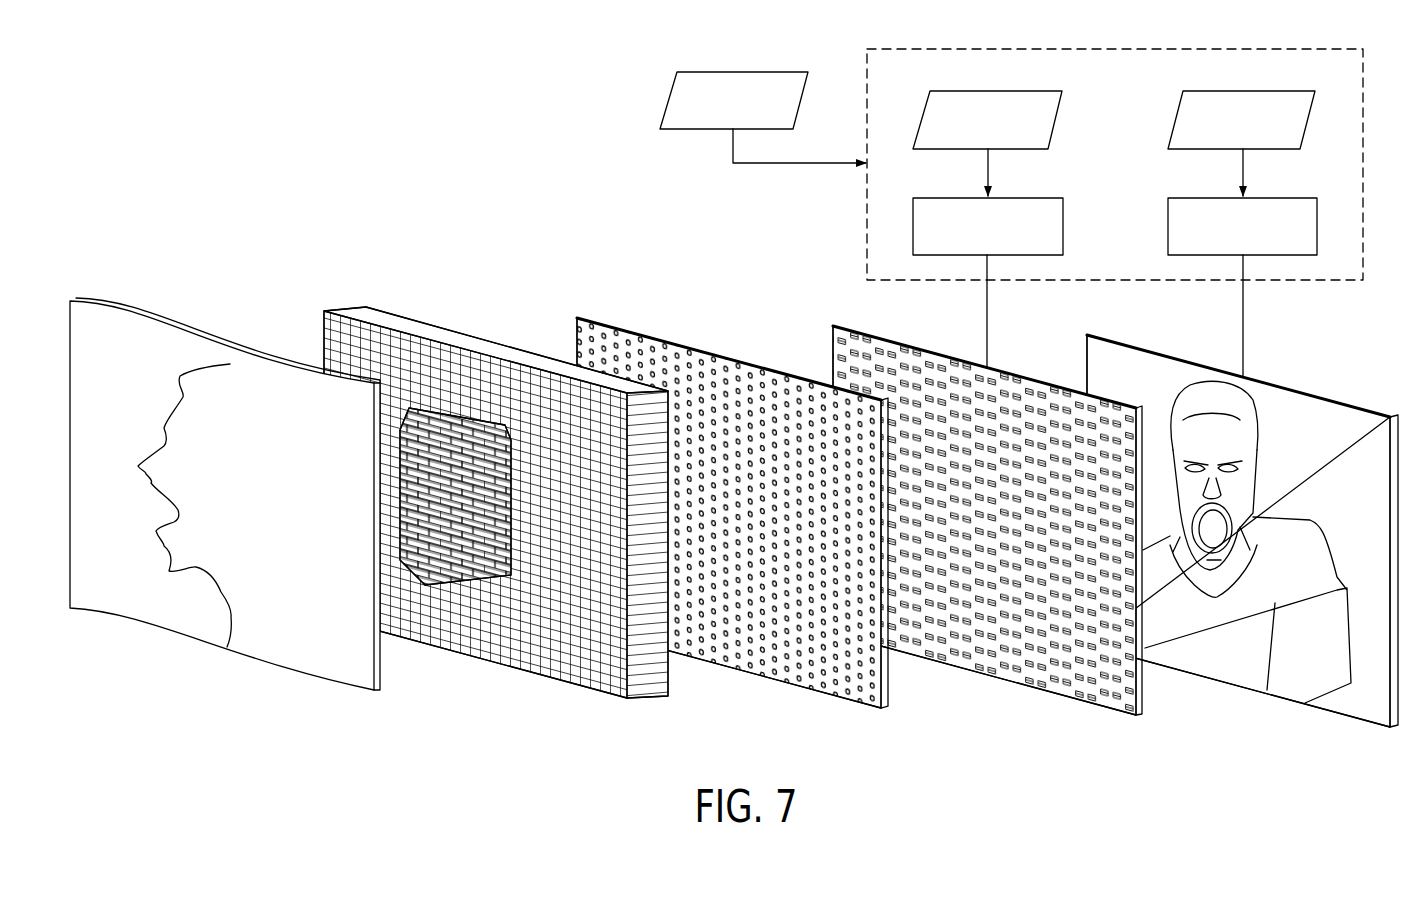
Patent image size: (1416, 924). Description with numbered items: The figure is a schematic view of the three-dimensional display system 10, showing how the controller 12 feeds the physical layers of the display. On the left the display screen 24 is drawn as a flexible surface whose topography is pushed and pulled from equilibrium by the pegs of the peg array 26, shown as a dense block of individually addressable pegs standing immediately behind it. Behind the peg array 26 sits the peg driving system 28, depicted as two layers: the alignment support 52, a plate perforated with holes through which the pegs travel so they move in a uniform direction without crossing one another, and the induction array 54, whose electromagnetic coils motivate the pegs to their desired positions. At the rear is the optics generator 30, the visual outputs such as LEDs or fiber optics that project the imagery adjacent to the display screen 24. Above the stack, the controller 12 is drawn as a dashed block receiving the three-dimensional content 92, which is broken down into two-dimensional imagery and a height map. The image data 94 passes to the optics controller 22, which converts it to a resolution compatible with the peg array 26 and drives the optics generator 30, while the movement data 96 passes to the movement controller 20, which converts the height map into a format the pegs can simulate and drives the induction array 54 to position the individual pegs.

The 3D display system 10 is at (279, 169).
The controller 12 is at (1240, 49).
The movement controller 20 is at (1025, 197).
The optics controller 22 is at (1280, 197).
The display screen 24 is at (156, 313).
The peg array 26 is at (440, 328).
The peg driving system 28 is at (858, 303).
The optics generator 30 is at (1170, 354).
The alignment support 52 is at (658, 342).
The induction array 54 is at (916, 347).
The 3D content 92 is at (802, 100).
The image data 94 is at (1312, 123).
The movement data 96 is at (1060, 123).